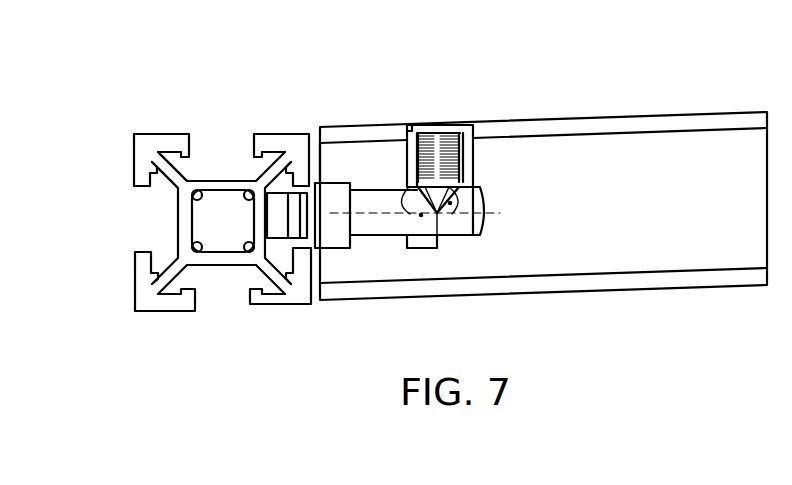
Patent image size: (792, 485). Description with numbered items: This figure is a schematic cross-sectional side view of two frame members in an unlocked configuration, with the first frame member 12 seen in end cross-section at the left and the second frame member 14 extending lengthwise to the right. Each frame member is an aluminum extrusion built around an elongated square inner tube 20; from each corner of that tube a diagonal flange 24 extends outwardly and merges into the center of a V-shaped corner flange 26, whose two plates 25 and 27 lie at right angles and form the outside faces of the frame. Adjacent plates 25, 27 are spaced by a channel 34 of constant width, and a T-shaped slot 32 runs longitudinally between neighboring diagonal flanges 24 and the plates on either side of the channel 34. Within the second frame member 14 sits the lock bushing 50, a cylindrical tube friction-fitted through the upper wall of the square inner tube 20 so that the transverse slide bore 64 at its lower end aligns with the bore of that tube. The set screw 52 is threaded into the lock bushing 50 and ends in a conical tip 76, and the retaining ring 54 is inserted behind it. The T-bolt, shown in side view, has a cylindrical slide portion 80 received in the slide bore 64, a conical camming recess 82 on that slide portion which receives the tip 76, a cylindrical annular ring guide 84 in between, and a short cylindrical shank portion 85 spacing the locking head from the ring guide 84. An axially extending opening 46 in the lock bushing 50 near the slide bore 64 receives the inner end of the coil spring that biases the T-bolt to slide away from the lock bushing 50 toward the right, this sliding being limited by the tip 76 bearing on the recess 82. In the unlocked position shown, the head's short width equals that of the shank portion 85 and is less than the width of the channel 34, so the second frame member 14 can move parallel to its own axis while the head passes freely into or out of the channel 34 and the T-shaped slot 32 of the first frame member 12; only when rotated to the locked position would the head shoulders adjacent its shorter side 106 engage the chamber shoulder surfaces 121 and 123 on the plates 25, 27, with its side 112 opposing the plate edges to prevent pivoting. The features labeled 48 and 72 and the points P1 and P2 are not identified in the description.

The first frame member 12 is at (120, 228).
The second frame member 14 is at (679, 103).
The square inner tube 20 is at (213, 180).
The diagonal flange 24 is at (268, 278).
The plate 25 is at (172, 309).
The V-shaped corner flange 26 is at (137, 300).
The plate 27 is at (137, 297).
The T-shaped slot 32 is at (157, 210).
The channel 34 is at (140, 242).
The axially extending opening 46 is at (402, 184).
The sleeve 48 is at (349, 183).
The lock bushing 50 is at (473, 72).
The set screw 52 is at (476, 162).
The retaining ring 54 is at (443, 127).
The transverse slide bore 64 is at (478, 243).
The housing notch 72 is at (483, 121).
The tip 76 is at (479, 177).
The slide portion 80 is at (485, 230).
The conical camming recess 82 is at (411, 211).
The annular ring guide 84 is at (346, 249).
The shank portion 85 is at (320, 143).
The side 106 is at (266, 238).
The side 112 is at (290, 229).
The chamber shoulder surface 121 is at (268, 156).
The chamber shoulder surface 123 is at (272, 256).
The first pivot point P1 is at (452, 202).
The second pivot point P2 is at (421, 216).